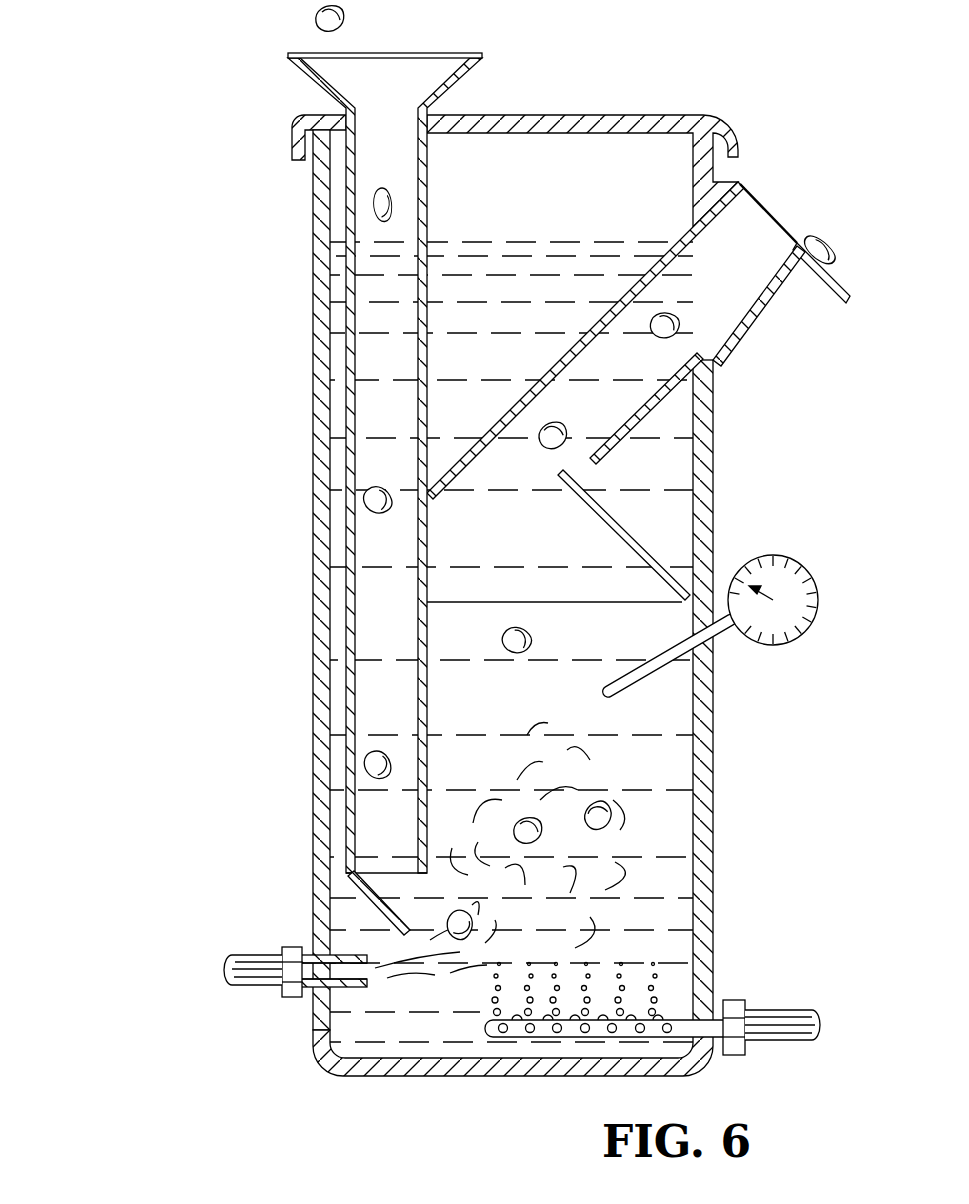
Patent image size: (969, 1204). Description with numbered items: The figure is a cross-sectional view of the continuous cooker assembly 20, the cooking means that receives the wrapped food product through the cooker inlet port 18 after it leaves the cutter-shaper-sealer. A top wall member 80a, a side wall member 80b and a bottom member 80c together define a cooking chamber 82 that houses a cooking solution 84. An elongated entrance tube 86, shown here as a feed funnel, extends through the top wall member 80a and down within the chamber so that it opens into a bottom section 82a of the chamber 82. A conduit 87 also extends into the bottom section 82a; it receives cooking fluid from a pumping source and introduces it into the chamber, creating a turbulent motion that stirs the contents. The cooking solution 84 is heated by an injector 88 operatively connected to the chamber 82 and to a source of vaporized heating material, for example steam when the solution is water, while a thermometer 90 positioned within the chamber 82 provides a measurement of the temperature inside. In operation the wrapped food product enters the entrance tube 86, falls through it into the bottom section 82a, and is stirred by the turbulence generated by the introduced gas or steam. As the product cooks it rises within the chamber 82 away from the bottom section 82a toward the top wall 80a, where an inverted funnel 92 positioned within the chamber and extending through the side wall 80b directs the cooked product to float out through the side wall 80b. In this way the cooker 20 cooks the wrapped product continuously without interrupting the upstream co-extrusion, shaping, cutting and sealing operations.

The cooker inlet port 18 is at (447, 52).
The cooker 20 is at (488, 583).
The top wall member 80a is at (636, 115).
The side wall member 80b is at (312, 470).
The bottom member 80c is at (382, 1078).
The cooking chamber 82 is at (532, 185).
The bottom section of the chamber 82a is at (560, 926).
The cooking solution 84 is at (645, 213).
The elongated entrance tube 86 is at (378, 150).
The conduit 87 is at (345, 990).
The injector 88 is at (498, 1040).
The thermometer 90 is at (785, 643).
The inverted funnel 92 is at (487, 458).